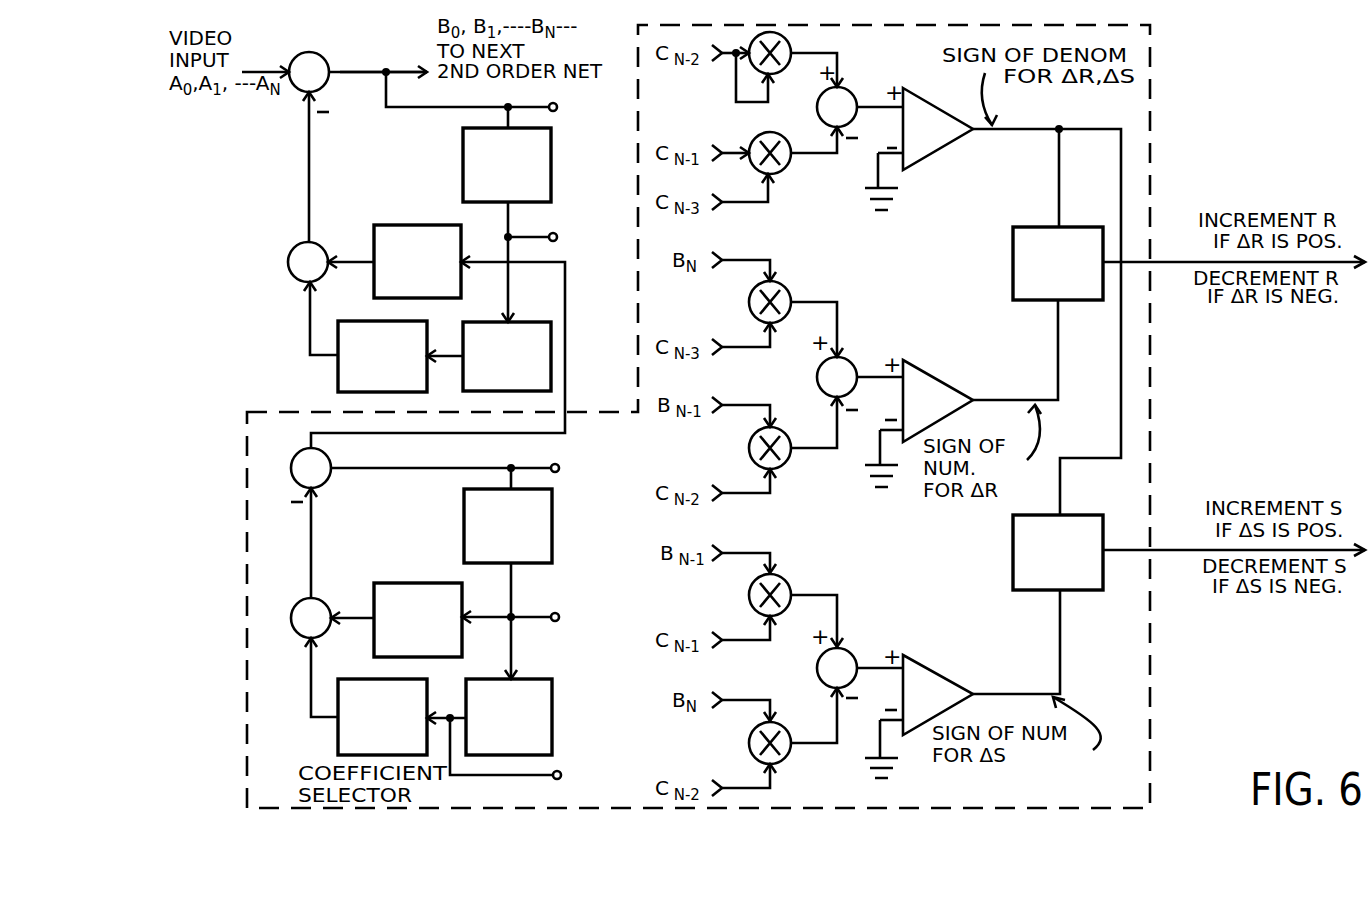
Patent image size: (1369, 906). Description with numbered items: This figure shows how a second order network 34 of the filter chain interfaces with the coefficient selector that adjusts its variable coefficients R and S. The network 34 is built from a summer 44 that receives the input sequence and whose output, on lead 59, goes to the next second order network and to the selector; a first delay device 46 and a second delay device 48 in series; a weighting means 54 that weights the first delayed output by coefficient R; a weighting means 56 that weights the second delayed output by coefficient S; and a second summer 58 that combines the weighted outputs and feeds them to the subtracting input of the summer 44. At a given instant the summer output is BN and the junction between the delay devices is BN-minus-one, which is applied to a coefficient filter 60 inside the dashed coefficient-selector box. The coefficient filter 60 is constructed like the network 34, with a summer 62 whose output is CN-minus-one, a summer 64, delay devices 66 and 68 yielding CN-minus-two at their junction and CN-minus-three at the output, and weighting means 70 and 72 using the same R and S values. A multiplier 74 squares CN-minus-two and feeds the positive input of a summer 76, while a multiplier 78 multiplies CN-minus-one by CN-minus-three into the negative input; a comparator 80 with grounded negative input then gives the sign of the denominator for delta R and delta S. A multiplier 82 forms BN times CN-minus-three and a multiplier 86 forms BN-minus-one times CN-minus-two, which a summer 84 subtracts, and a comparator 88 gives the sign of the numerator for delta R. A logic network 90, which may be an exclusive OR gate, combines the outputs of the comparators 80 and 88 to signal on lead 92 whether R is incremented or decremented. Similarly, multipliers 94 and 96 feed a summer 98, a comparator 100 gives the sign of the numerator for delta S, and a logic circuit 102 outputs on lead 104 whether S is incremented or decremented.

The second order network 34 is at (258, 188).
The summer 44 is at (328, 62).
The first delay device 46 is at (463, 148).
The delay device 48 is at (532, 322).
The weighting means 54 is at (412, 225).
The weighting means 56 is at (338, 382).
The second summer 58 is at (298, 240).
The lead 59 is at (397, 74).
The coefficient filter 60 is at (570, 535).
The summer 62 is at (332, 457).
The summer 64 is at (298, 607).
The delay device 66 is at (464, 525).
The delay device 68 is at (538, 679).
The weighting means 70 is at (415, 583).
The weighting means 72 is at (367, 679).
The multiplier 74 is at (793, 48).
The summer 76 is at (817, 107).
The multiplier 78 is at (788, 167).
The comparator 80 is at (942, 148).
The multiplier 82 is at (803, 280).
The summer 84 is at (850, 358).
The multiplier 86 is at (785, 465).
The comparator 88 is at (952, 370).
The logic network 90 is at (1013, 262).
The lead 92 is at (1170, 262).
The multiplier 94 is at (793, 583).
The multiplier 96 is at (787, 760).
The summer 98 is at (857, 647).
The comparator 100 is at (943, 673).
The logic circuit 102 is at (1013, 550).
The lead 104 is at (1172, 552).